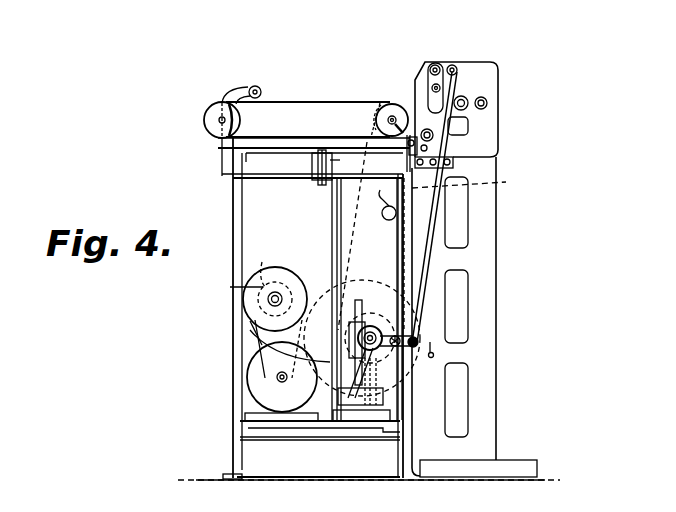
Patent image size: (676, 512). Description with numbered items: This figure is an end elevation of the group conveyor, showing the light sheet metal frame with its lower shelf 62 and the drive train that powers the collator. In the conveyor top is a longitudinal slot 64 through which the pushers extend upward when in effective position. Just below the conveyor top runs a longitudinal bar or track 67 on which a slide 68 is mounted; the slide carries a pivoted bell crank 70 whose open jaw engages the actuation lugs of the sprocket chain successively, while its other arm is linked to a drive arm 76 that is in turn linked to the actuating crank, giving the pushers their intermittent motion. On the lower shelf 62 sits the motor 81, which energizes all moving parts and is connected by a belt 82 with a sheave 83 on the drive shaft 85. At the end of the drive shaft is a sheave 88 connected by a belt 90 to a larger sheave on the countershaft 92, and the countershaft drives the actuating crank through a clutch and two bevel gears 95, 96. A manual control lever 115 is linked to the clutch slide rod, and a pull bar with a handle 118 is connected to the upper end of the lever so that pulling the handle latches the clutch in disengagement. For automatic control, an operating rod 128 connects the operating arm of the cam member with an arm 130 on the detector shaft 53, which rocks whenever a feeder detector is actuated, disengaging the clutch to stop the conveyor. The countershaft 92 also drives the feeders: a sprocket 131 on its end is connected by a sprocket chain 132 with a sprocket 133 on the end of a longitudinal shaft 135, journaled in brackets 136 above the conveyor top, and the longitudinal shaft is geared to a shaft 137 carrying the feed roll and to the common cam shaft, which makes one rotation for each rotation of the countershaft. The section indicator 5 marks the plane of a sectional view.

The section line 5 is at (374, 325).
The detector shaft 53 is at (434, 65).
The lower shelf 62 is at (283, 422).
The longitudinal slot 64 is at (318, 146).
The longitudinal bar or track 67 is at (343, 163).
The slide 68 is at (345, 299).
The bell crank 70 is at (320, 183).
The drive arm 76 is at (331, 204).
The motor 81 is at (250, 360).
The belt 82 is at (248, 333).
The sheave 83 is at (277, 291).
The drive shaft 85 is at (284, 292).
The sheave 88 is at (259, 263).
The belt 90 is at (336, 286).
The countershaft 92 is at (360, 377).
The bevel gear 95 is at (378, 325).
The bevel gear 96 is at (357, 300).
The lever 115 is at (386, 236).
The handle 118 is at (380, 199).
The operating rod 128 is at (427, 255).
The arm 130 is at (446, 64).
The sprocket 131 is at (450, 352).
The sprocket chain 132 is at (473, 183).
The sprocket 133 is at (381, 100).
The longitudinal shaft 135 is at (392, 115).
The brackets 136 is at (394, 155).
The shaft 137 is at (433, 138).